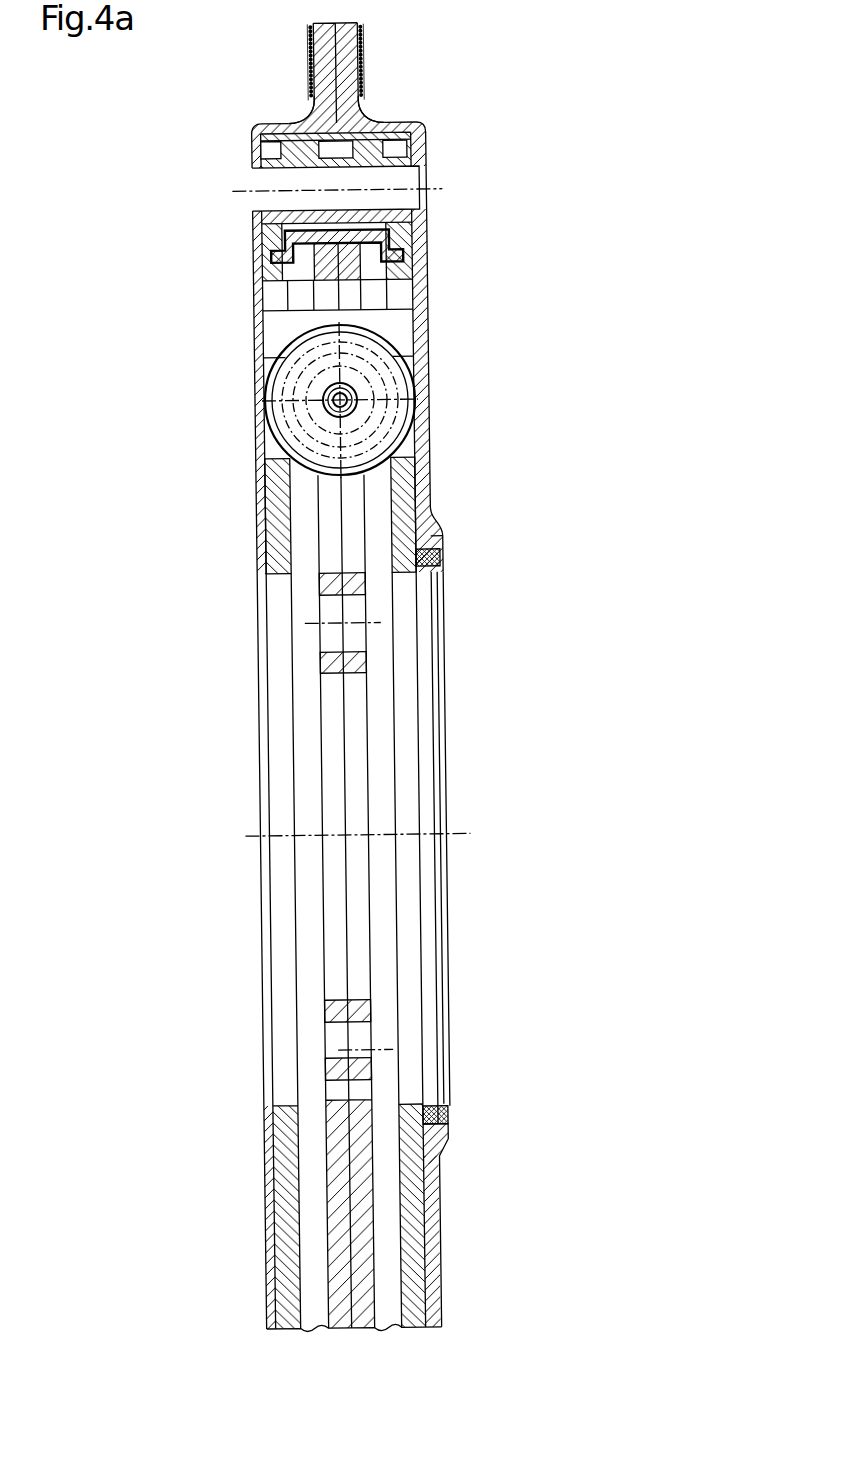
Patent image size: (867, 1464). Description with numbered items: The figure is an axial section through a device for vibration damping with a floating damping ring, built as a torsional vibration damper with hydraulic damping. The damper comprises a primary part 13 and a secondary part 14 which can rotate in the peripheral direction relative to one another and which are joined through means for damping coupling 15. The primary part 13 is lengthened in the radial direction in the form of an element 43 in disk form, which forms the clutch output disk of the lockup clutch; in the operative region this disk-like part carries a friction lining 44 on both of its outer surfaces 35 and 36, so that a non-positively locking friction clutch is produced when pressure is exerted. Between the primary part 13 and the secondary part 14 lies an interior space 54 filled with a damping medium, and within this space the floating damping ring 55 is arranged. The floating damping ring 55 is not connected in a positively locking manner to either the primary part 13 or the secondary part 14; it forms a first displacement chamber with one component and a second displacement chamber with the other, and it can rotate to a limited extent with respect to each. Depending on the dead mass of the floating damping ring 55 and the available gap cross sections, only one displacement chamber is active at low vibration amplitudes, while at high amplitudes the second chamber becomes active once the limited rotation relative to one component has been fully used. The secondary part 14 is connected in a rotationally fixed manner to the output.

The primary part 13 is at (429, 305).
The secondary part 14 is at (358, 1207).
The means for damping coupling 15 is at (405, 190).
The outer surface 35 is at (317, 37).
The outer surface 36 is at (366, 88).
The element in disk form 43 is at (352, 62).
The friction lining 44 is at (358, 28).
The interior space 54 is at (293, 297).
The floating damping ring 55 is at (418, 245).